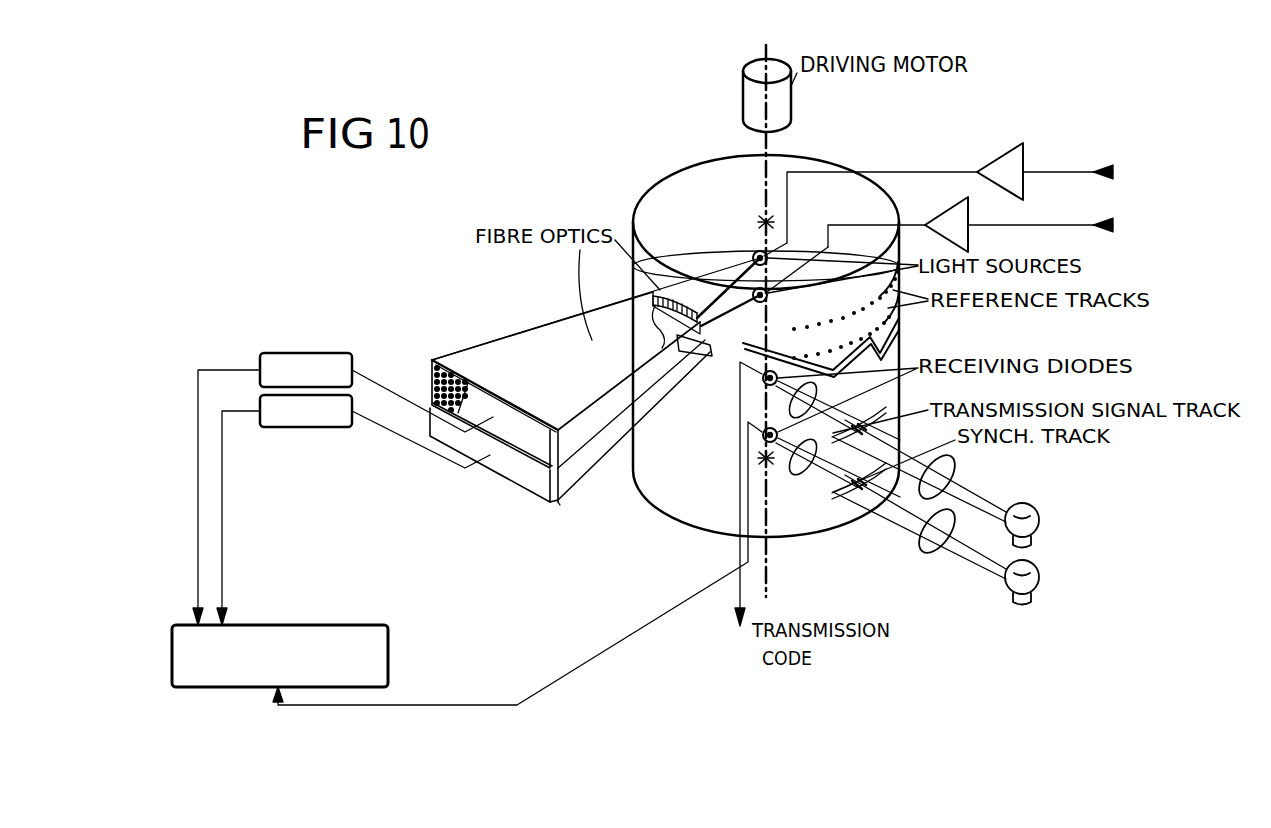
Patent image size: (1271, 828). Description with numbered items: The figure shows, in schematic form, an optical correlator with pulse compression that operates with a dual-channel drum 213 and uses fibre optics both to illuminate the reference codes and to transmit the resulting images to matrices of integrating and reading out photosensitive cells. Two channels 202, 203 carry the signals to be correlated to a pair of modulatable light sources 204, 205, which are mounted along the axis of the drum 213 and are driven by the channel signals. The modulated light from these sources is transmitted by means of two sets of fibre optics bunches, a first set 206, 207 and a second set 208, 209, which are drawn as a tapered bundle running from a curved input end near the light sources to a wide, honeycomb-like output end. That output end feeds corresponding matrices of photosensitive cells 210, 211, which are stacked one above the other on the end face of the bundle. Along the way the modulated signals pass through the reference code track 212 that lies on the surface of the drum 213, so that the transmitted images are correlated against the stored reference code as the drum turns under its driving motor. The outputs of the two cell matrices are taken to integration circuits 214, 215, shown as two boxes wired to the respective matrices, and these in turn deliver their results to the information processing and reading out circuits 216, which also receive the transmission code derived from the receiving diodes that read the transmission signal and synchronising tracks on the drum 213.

The channel 202 is at (1042, 166).
The channel 203 is at (1039, 220).
The modulatable light source 204 is at (757, 254).
The modulatable light source 205 is at (769, 296).
The fibre optics bunch 206 is at (653, 287).
The fibre optics bunch 207 is at (712, 358).
The fibre optics bunch 208 is at (578, 387).
The fibre optics bunch 209 is at (605, 440).
The matrix of photosensitive cells 210 is at (492, 414).
The matrix of photosensitive cells 211 is at (570, 421).
The reference code track 212 is at (650, 318).
The drum 213 is at (855, 512).
The integration circuit 214 is at (331, 358).
The integration circuit 215 is at (307, 420).
The information processing and reading out circuit 216 is at (380, 658).